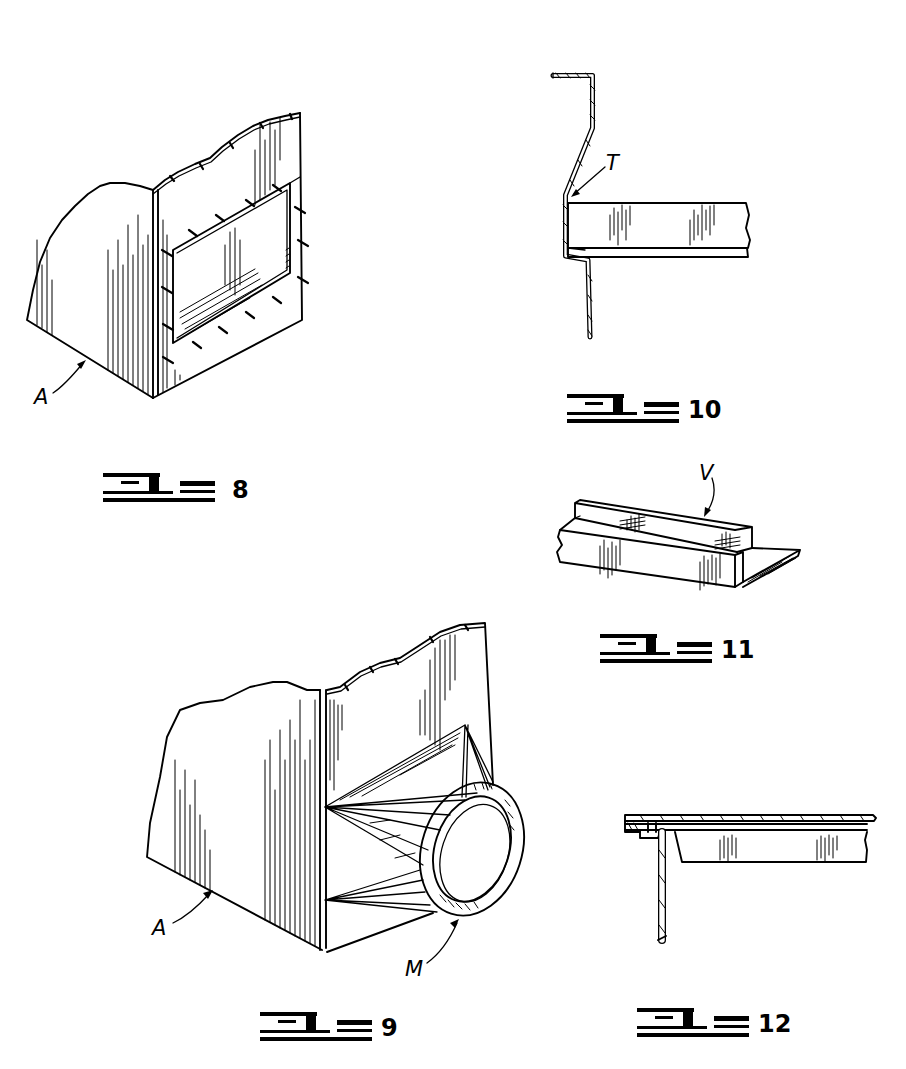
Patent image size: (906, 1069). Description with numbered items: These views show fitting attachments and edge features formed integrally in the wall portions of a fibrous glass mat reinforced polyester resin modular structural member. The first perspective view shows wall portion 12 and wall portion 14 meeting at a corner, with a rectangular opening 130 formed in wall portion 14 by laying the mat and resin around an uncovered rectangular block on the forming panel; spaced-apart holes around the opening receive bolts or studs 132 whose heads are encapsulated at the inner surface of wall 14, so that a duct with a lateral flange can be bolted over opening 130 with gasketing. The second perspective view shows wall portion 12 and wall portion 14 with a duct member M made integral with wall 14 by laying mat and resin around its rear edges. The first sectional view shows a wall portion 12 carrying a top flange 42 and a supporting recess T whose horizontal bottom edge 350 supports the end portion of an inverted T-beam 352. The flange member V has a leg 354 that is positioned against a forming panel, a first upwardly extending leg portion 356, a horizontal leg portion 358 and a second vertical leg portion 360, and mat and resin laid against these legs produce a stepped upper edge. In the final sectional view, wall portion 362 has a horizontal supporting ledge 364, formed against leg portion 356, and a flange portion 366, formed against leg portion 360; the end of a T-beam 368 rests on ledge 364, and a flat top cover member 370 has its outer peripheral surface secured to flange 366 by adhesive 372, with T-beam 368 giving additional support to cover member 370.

In FIG. 8, the wall portion 12 is at (90, 207).
In FIG. 10, the wall portion 12 is at (592, 105).
In FIG. 9, the wall portion 12 is at (257, 700).
In FIG. 8, the wall portion 14 is at (293, 142).
In FIG. 9, the wall portion 14 is at (457, 637).
In FIG. 10, the top flange 42 is at (577, 73).
In FIG. 8, the rectangular opening 130 is at (283, 233).
In FIG. 8, the studs 132 is at (297, 170).
In FIG. 10, the horizontal bottom edge 350 is at (585, 250).
In FIG. 10, the inverted T-beam 352 is at (678, 218).
In FIG. 11, the leg 354 is at (775, 547).
In FIG. 11, the first upwardly extending leg portion 356 is at (642, 558).
In FIG. 11, the horizontal leg portion 358 is at (577, 521).
In FIG. 11, the second vertical leg portion 360 is at (595, 515).
In FIG. 12, the wall portion 362 is at (667, 903).
In FIG. 12, the horizontal supporting ledge 364 is at (648, 822).
In FIG. 12, the flange portion 366 is at (632, 832).
In FIG. 12, the T-beam 368 is at (767, 848).
In FIG. 12, the flat top cover member 370 is at (760, 815).
In FIG. 12, the adhesive 372 is at (627, 822).